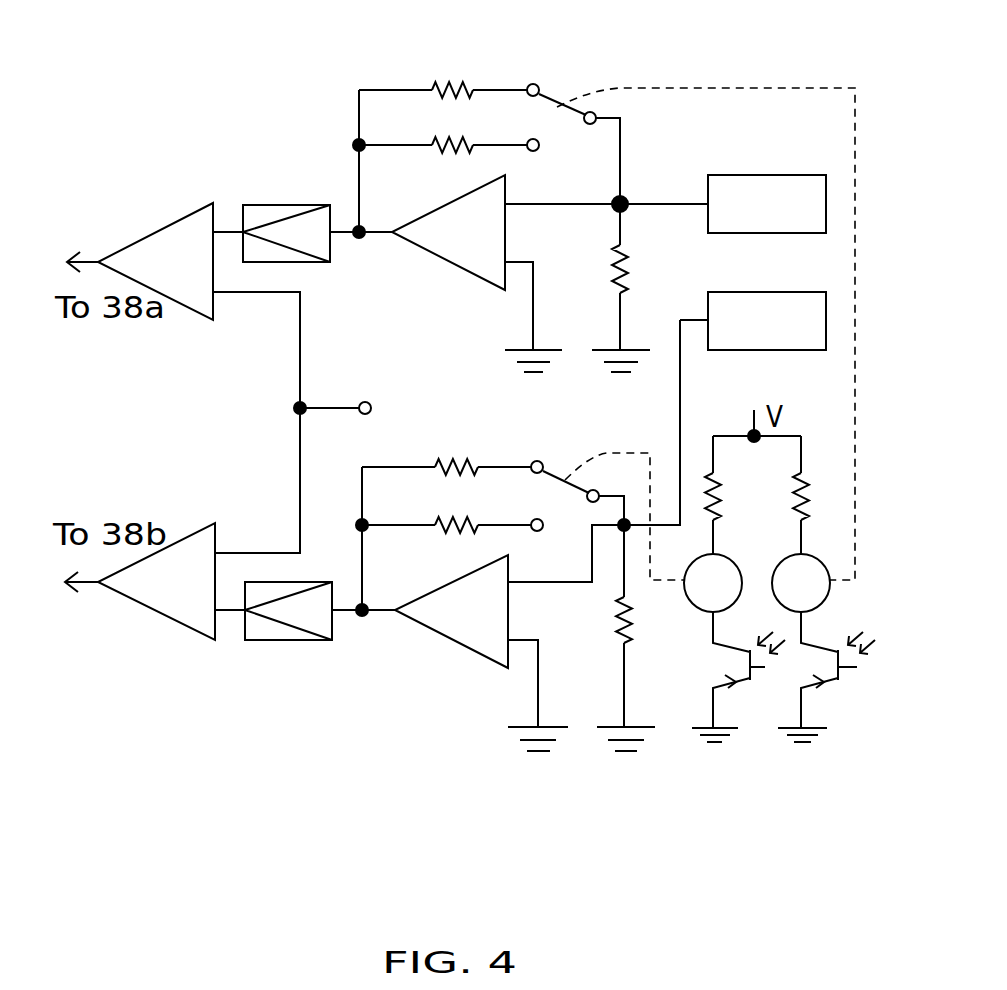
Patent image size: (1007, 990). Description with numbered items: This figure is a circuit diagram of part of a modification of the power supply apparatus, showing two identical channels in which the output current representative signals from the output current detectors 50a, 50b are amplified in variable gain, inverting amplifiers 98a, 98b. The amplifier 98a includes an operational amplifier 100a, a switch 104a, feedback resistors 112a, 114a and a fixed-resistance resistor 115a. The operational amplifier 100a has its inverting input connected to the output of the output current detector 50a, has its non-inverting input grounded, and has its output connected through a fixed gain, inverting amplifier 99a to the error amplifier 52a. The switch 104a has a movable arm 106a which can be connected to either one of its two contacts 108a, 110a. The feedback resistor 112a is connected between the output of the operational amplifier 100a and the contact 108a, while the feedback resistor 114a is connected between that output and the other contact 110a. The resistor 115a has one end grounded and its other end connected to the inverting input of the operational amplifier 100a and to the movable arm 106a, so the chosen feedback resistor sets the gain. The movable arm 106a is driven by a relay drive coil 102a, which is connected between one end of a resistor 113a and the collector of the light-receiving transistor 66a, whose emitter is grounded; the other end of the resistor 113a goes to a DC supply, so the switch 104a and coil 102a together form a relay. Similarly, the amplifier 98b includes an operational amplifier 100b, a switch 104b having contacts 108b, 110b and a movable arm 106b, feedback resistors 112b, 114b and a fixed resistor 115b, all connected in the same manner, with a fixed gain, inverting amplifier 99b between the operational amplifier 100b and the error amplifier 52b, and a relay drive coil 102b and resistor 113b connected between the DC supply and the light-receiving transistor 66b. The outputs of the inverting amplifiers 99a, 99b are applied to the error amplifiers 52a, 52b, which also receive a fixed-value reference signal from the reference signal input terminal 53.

The error amplifier 52a is at (188, 245).
The error amplifier 52b is at (172, 588).
The fixed gain inverting amplifier 99a is at (266, 210).
The fixed gain inverting amplifier 99b is at (258, 628).
The operational amplifier 100a is at (445, 245).
The operational amplifier 100b is at (450, 625).
The variable gain inverting amplifier 98a is at (497, 341).
The variable gain inverting amplifier 98b is at (500, 711).
The feedback resistor 112a is at (458, 82).
The feedback resistor 112b is at (452, 460).
The switch 104a is at (489, 127).
The switch 104b is at (491, 509).
The feedback resistor 114a is at (440, 140).
The feedback resistor 114b is at (453, 517).
The contact 108a is at (540, 84).
The contact 108b is at (543, 462).
The contact 110a is at (540, 152).
The contact 110b is at (540, 532).
The movable arm 106a is at (560, 107).
The movable arm 106b is at (553, 470).
The fixed-resistance resistor 115a is at (627, 250).
The fixed resistor 115b is at (617, 600).
The output current detector 50a is at (731, 190).
The output current detector 50b is at (732, 302).
The reference signal input terminal 53 is at (371, 409).
The resistor 113a is at (808, 490).
The resistor 113b is at (717, 490).
The relay drive coil 102a is at (810, 573).
The relay drive coil 102b is at (698, 606).
The light-receiving transistor 66a is at (820, 667).
The light-receiving transistor 66b is at (740, 682).